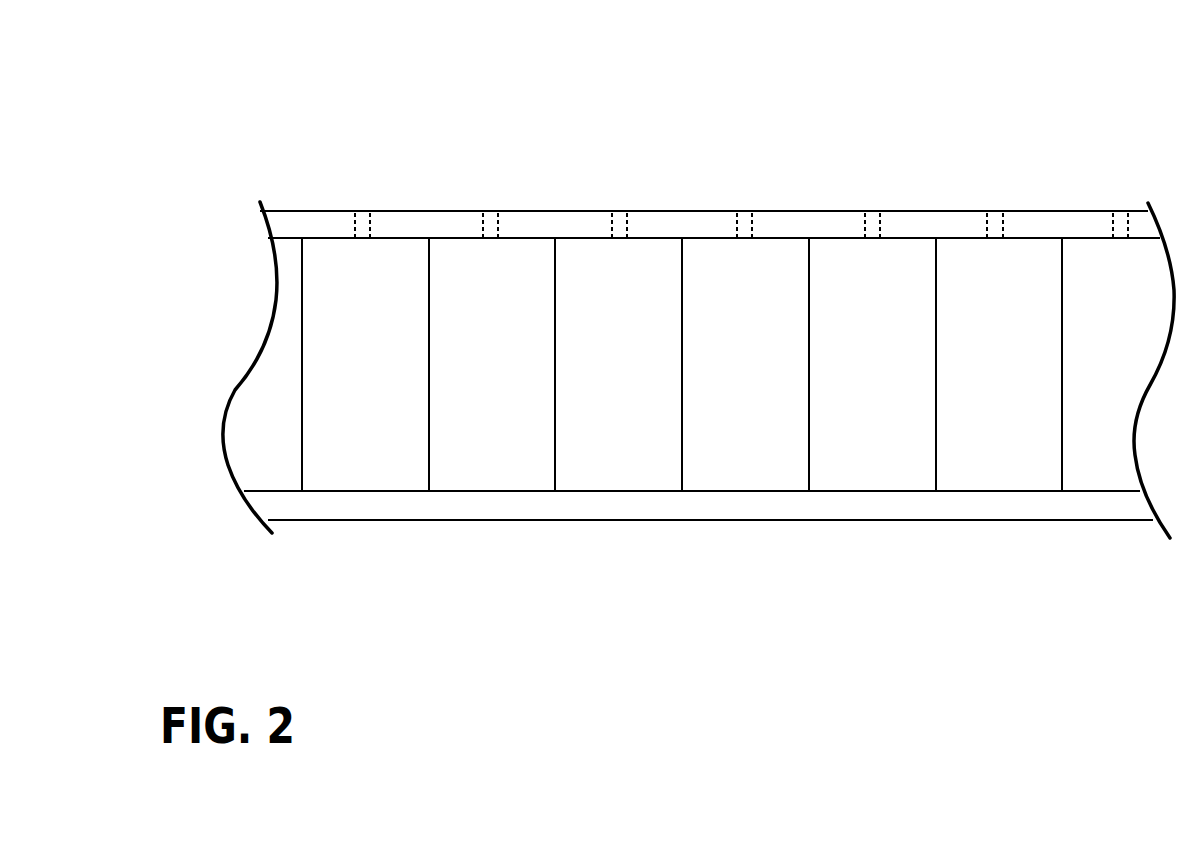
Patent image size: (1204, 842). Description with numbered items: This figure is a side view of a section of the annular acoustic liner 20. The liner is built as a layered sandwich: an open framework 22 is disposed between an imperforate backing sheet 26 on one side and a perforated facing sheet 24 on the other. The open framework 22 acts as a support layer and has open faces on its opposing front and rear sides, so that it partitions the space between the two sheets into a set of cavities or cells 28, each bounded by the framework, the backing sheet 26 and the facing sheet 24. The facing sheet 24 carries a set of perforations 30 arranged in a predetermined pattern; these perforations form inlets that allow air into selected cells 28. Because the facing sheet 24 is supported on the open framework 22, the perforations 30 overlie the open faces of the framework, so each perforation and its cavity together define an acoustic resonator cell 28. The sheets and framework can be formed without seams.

The annular acoustic liner 20 is at (528, 128).
The open framework 22 is at (810, 313).
The facing sheet 24 is at (598, 212).
The backing sheet 26 is at (663, 522).
The cells 28 is at (718, 349).
The perforations 30 is at (382, 220).